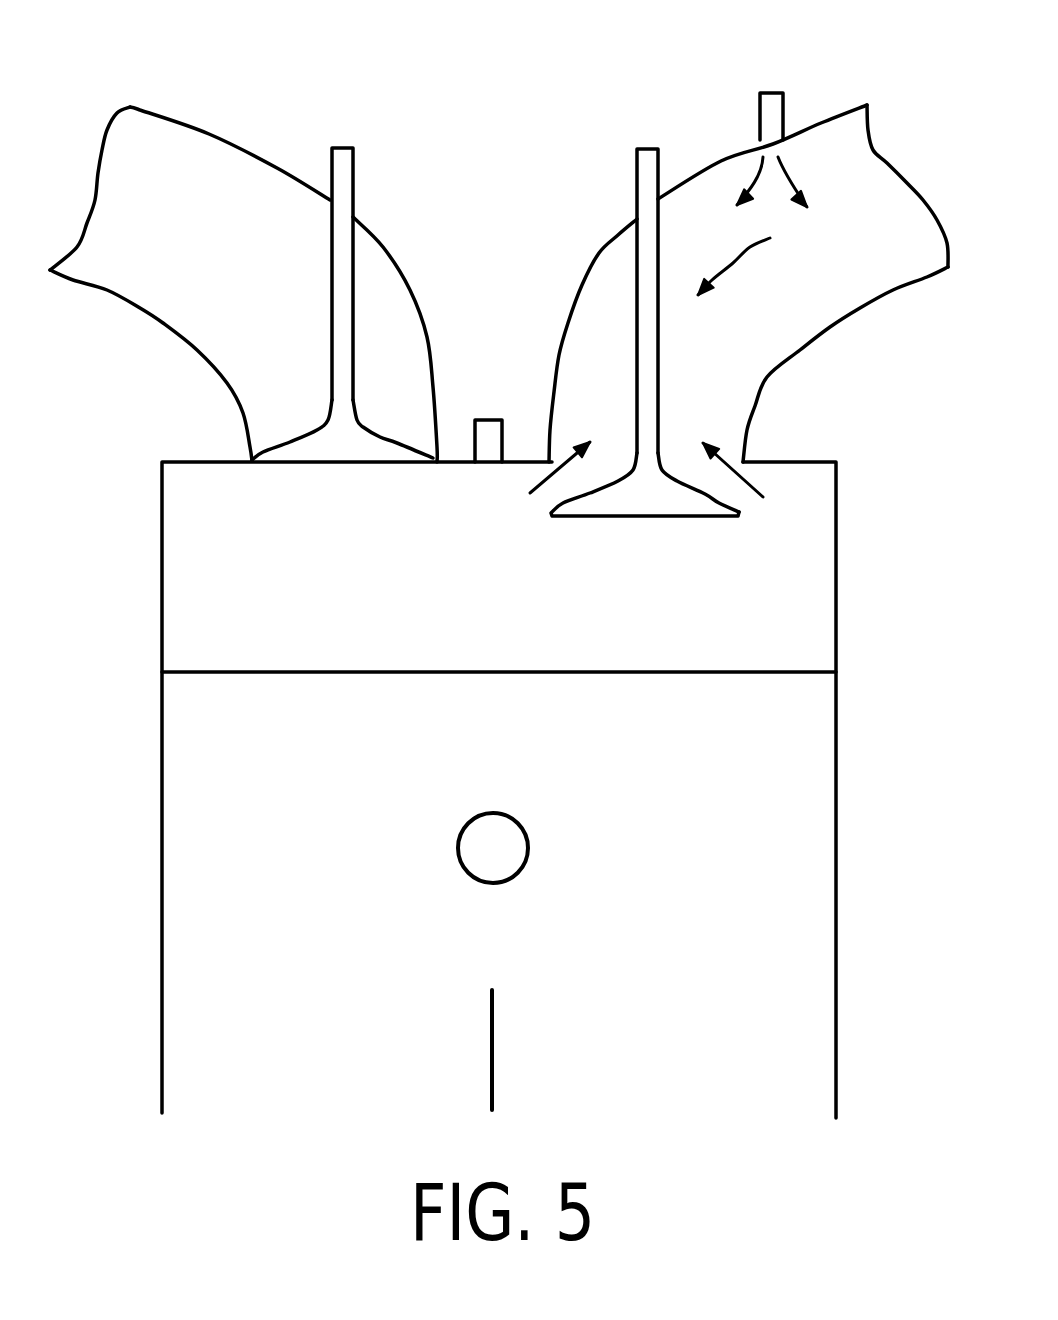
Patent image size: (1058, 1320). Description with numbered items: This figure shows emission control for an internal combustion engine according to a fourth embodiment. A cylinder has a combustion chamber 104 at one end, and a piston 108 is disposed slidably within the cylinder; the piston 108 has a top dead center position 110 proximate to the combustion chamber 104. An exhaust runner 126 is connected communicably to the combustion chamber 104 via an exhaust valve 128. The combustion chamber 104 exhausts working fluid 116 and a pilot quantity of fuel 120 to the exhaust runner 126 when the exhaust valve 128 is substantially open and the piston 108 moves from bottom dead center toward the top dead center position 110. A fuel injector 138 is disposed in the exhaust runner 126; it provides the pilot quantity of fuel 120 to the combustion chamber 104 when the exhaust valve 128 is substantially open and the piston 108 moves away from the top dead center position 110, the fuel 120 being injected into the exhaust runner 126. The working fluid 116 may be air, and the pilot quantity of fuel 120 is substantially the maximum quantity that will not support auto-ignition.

The combustion chamber 104 is at (807, 645).
The piston 108 is at (499, 891).
The top dead center position 110 is at (499, 891).
The working fluid 116 is at (243, 315).
The pilot quantity of fuel 120 is at (735, 265).
The exhaust runner 126 is at (900, 278).
The exhaust valve 128 is at (660, 364).
The fuel injector 138 is at (773, 90).